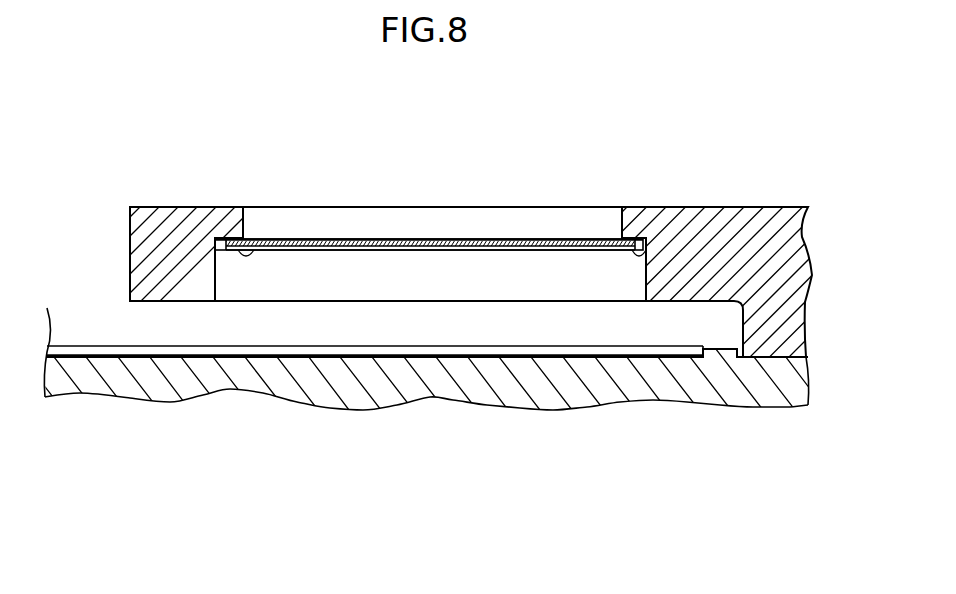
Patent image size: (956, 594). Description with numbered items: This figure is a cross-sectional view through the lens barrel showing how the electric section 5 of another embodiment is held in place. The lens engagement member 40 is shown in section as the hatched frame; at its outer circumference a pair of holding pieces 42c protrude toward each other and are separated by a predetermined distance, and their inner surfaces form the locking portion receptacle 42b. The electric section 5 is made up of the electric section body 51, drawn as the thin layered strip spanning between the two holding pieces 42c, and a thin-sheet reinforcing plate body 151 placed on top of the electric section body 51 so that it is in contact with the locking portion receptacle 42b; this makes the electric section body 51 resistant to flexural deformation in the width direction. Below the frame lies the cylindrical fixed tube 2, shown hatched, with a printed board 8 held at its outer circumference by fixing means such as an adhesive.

The lens engagement member 40 is at (760, 207).
The holding pieces 42c is at (232, 207).
The locking portion receptacle 42b is at (263, 240).
The electric section 5 is at (429, 303).
The reinforcing plate body 151 is at (442, 239).
The electric section body 51 is at (415, 250).
The printed board 8 is at (520, 348).
The fixed tube 2 is at (620, 384).